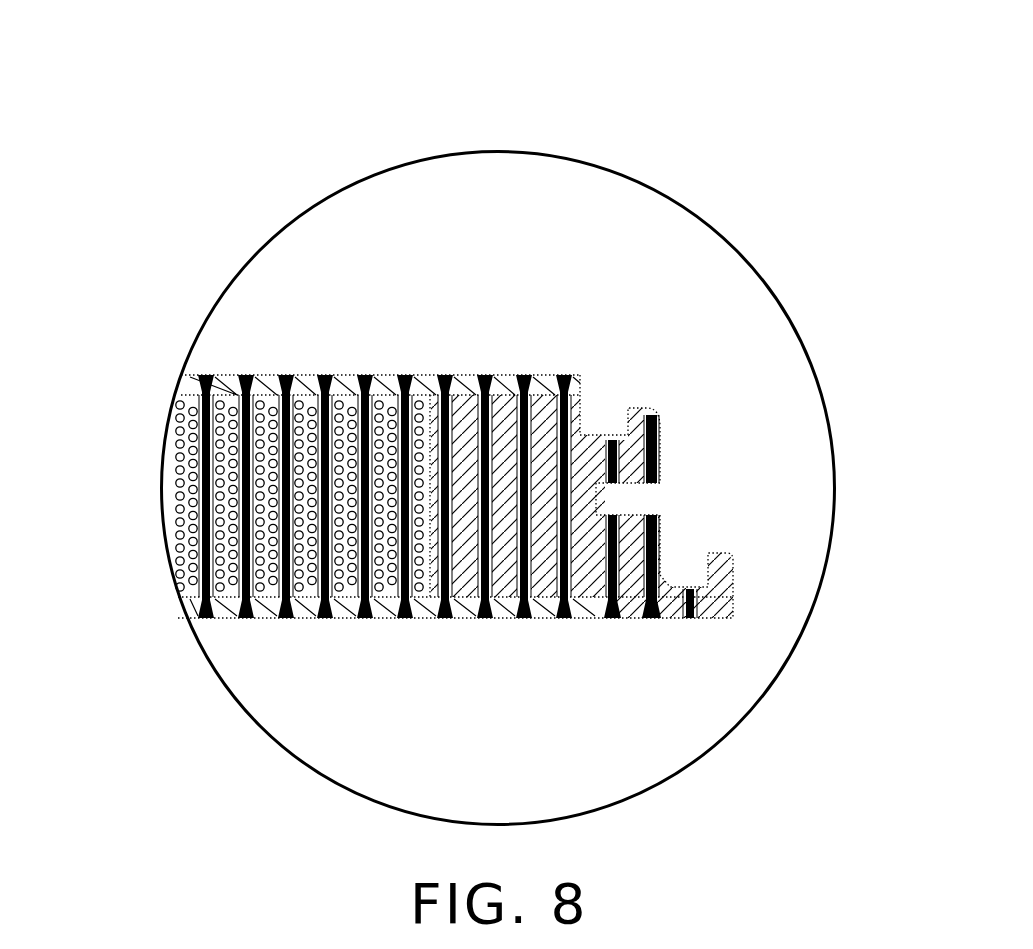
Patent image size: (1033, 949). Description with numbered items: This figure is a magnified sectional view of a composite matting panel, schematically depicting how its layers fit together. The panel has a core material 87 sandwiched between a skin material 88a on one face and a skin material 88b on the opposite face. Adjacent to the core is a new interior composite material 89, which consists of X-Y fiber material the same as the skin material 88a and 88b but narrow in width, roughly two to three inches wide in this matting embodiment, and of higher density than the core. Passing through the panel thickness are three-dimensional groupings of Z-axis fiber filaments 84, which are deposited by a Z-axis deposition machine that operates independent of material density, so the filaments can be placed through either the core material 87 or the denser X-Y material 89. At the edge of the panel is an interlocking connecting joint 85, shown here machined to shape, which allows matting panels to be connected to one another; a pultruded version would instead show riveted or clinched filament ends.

The 3-D groupings of Z-axis fiber filaments 84 is at (442, 378).
The interlocking connecting joint 85 is at (662, 458).
The core material 87 is at (230, 395).
The skin material 88a is at (307, 378).
The skin material 88b is at (300, 605).
The interior composite material 89 is at (540, 442).